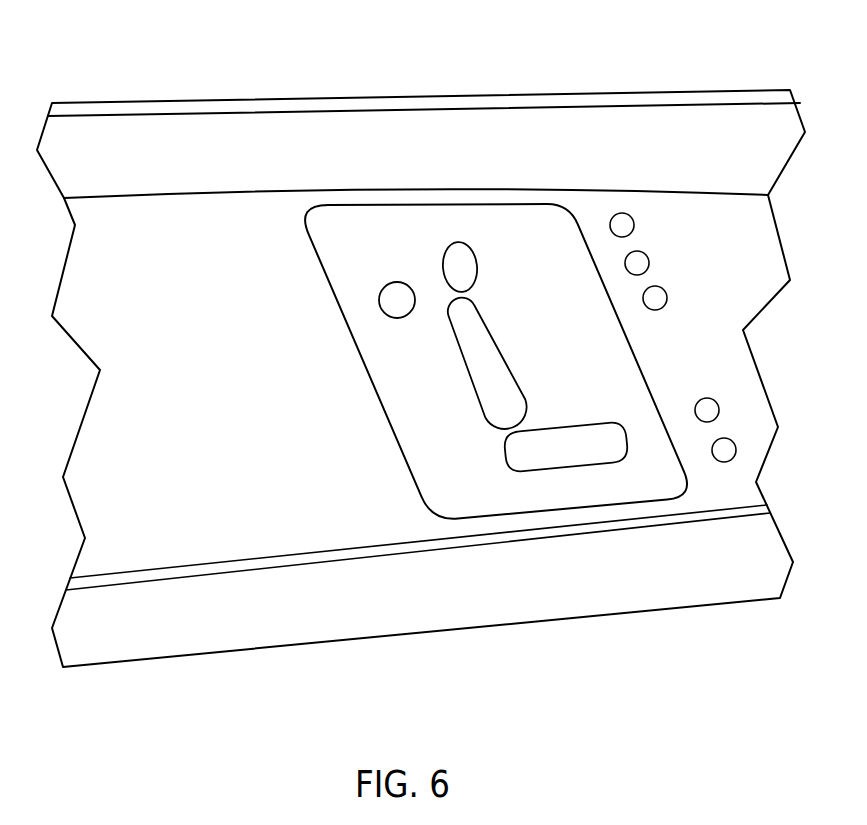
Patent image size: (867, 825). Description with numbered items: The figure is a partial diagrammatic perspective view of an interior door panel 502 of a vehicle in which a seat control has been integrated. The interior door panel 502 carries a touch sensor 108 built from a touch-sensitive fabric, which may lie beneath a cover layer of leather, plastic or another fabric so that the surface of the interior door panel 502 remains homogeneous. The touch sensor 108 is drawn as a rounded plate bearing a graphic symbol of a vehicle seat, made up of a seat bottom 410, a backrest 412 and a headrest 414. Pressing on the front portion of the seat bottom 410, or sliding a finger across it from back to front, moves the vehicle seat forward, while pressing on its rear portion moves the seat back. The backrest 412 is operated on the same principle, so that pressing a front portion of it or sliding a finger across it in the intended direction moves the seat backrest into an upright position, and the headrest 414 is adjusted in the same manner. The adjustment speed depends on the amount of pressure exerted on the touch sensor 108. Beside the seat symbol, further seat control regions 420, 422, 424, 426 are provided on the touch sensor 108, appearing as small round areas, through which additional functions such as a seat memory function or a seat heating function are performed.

The interior door panel 502 is at (204, 237).
The touch sensor 108 is at (525, 225).
The headrest 414 is at (455, 255).
The backrest 412 is at (490, 412).
The seat bottom 410 is at (573, 453).
The seat control region 420 is at (623, 227).
The seat control region 422 is at (642, 263).
The seat control region 424 is at (658, 293).
The seat control region 426 is at (708, 412).